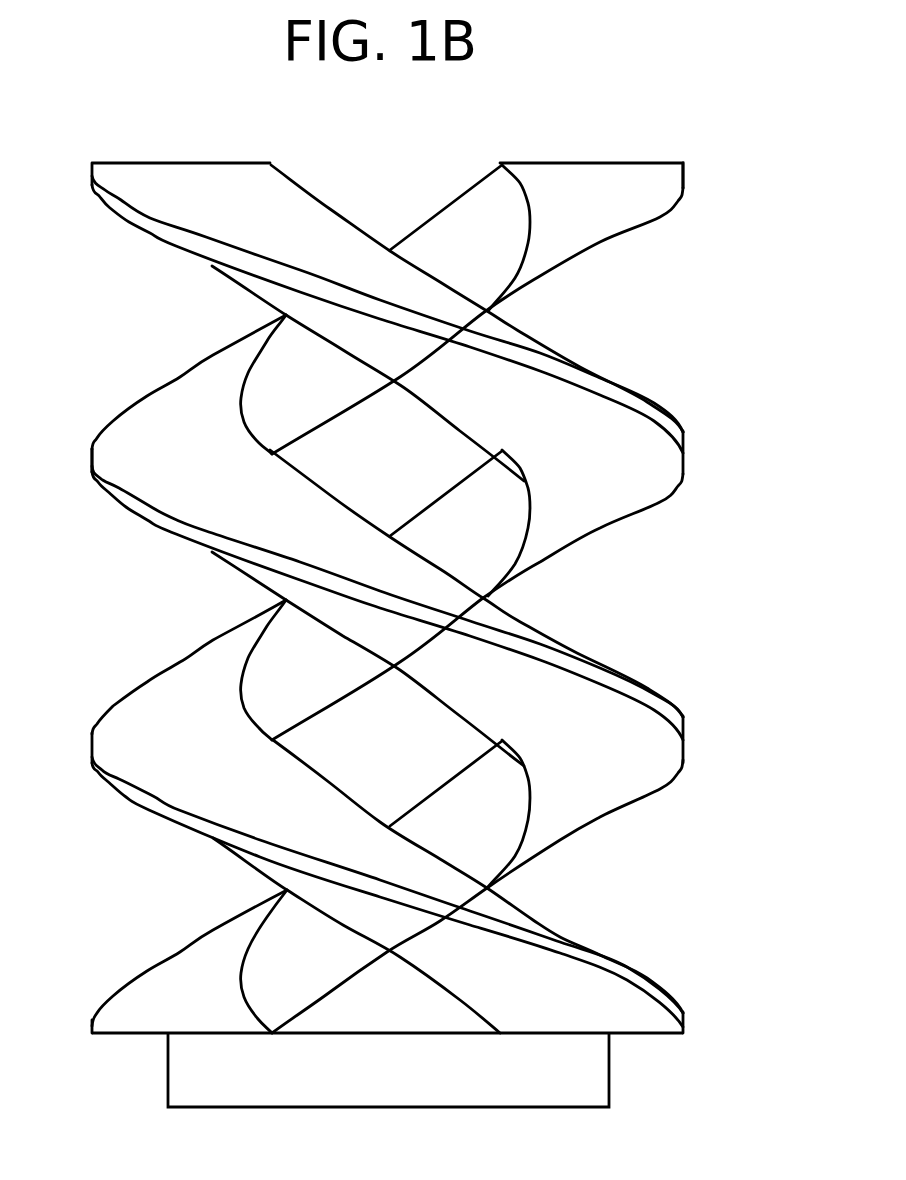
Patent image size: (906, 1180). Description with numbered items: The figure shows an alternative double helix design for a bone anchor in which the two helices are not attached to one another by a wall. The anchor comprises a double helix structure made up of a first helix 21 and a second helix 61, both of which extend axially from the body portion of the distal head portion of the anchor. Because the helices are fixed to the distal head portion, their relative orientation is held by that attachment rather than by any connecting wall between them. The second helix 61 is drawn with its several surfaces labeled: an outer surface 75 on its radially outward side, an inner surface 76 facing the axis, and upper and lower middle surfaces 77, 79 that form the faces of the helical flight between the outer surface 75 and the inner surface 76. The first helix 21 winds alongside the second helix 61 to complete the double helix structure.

The first helix 21 is at (412, 598).
The second helix 61 is at (657, 212).
The outer surface 75 is at (273, 580).
The inner surface 76 is at (325, 377).
The upper middle surface 77 is at (132, 400).
The lower middle surface 79 is at (585, 705).